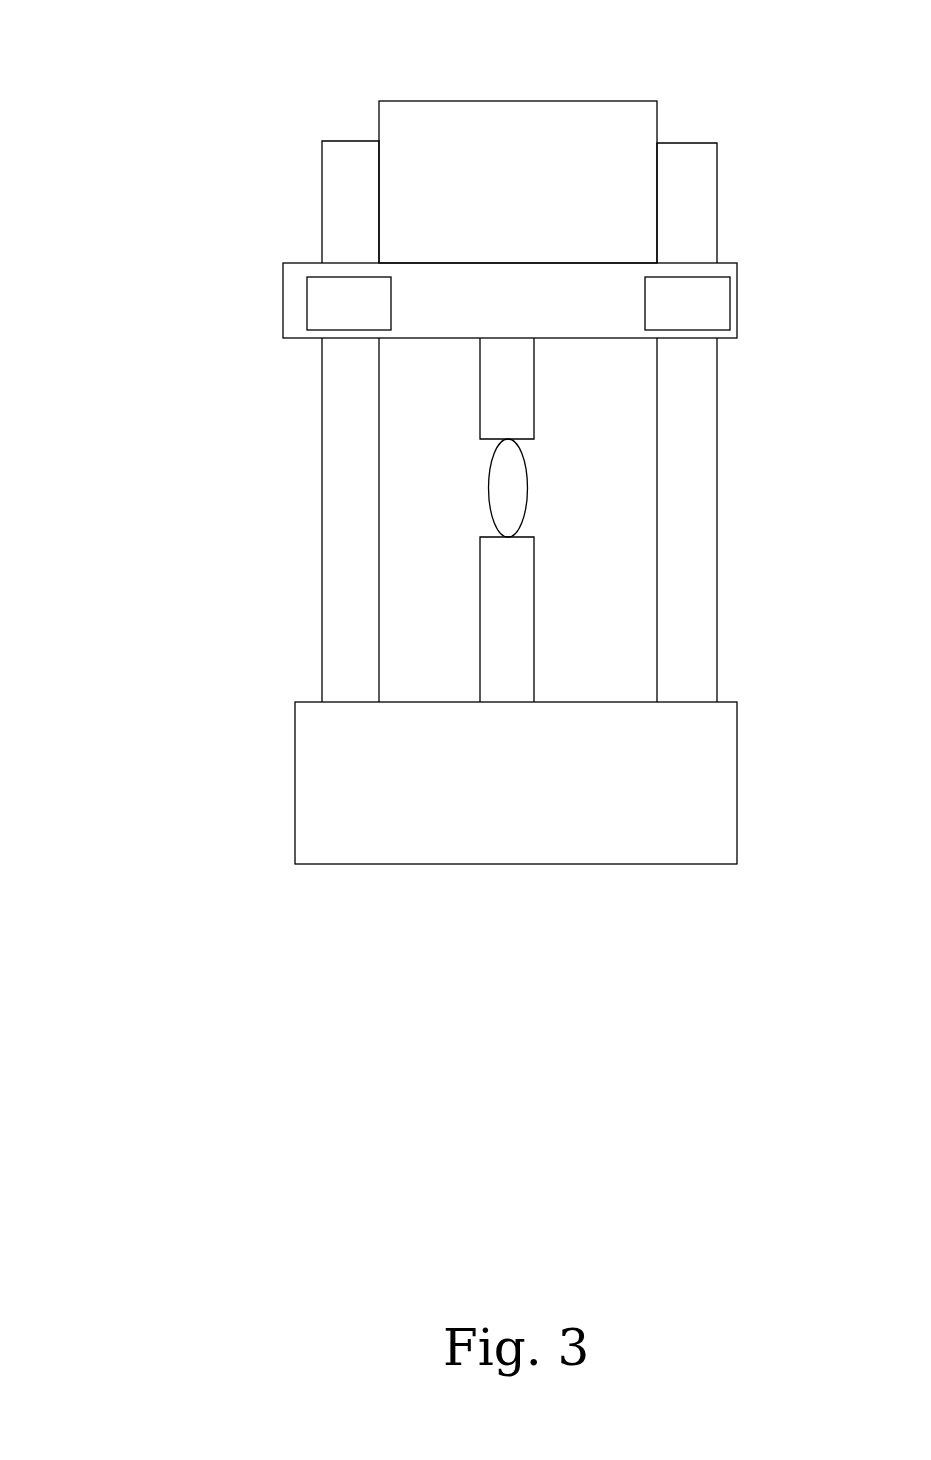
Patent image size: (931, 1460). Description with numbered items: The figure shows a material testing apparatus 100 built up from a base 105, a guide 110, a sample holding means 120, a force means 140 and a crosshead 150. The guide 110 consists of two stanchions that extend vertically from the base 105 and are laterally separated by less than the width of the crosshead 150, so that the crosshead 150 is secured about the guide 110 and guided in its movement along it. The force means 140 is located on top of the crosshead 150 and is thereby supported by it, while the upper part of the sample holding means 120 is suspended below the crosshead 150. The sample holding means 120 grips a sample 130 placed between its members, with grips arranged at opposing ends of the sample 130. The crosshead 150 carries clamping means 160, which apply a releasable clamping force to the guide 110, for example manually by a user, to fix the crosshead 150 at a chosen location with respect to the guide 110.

The material testing apparatus 100 is at (190, 98).
The base 105 is at (703, 813).
The guide means 110 is at (345, 669).
The sample holding means 120 is at (501, 409).
The sample 130 is at (513, 499).
The force means 140 is at (562, 127).
The crosshead 150 is at (535, 294).
The clamping means 160 is at (678, 308).